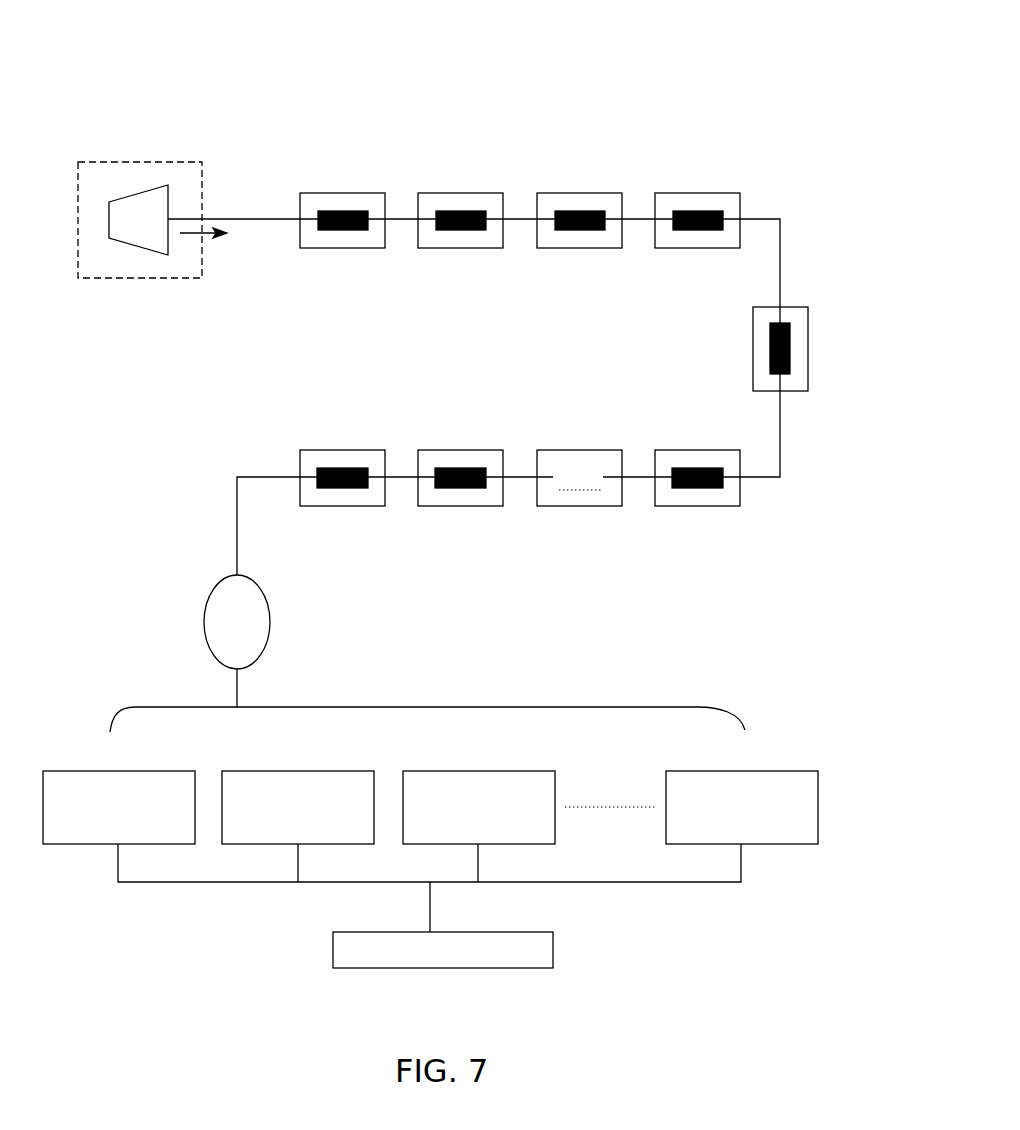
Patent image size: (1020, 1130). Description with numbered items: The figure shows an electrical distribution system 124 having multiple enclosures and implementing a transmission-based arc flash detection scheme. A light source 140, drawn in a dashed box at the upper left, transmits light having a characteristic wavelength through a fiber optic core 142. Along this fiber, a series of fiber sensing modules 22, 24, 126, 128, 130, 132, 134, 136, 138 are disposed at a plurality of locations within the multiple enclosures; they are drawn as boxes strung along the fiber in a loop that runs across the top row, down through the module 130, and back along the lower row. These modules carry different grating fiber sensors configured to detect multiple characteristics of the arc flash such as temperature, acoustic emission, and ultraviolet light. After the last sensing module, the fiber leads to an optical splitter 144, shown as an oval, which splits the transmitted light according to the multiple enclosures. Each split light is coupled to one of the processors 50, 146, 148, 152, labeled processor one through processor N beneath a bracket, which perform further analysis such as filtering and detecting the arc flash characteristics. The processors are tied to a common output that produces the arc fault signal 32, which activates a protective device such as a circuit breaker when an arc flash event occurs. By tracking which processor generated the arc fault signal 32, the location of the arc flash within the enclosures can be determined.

The electrical distribution system 124 is at (668, 60).
The light source 140 is at (137, 161).
The fiber optic core 142 is at (235, 217).
The fiber sensor 22 is at (342, 211).
The fiber sensor 24 is at (460, 211).
The fiber sensor 126 is at (578, 211).
The fiber sensor 128 is at (697, 211).
The fiber sensor 130 is at (790, 322).
The fiber sensor 132 is at (697, 488).
The fiber sensor 134 is at (578, 492).
The fiber sensor 136 is at (460, 488).
The fiber sensor 138 is at (342, 488).
The optical splitter 144 is at (272, 617).
The processor 50 is at (157, 770).
The processor 146 is at (298, 770).
The processor 148 is at (478, 770).
The processor 152 is at (777, 770).
The arc fault signal 32 is at (555, 948).